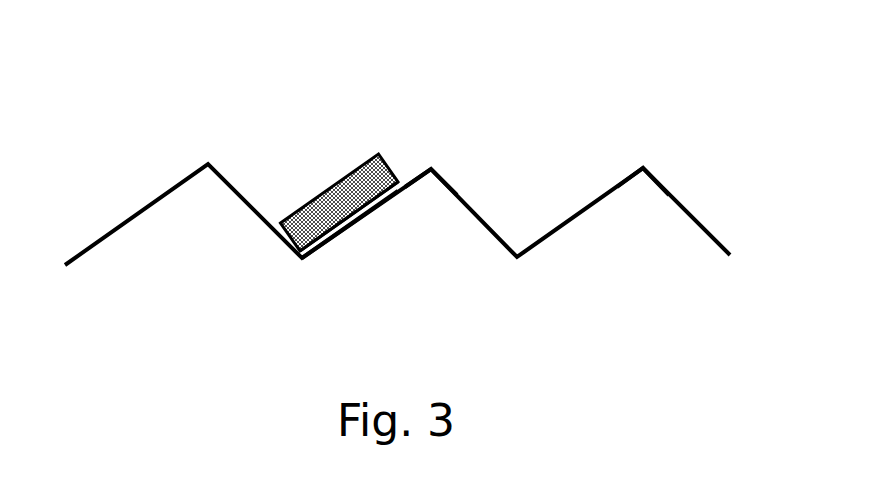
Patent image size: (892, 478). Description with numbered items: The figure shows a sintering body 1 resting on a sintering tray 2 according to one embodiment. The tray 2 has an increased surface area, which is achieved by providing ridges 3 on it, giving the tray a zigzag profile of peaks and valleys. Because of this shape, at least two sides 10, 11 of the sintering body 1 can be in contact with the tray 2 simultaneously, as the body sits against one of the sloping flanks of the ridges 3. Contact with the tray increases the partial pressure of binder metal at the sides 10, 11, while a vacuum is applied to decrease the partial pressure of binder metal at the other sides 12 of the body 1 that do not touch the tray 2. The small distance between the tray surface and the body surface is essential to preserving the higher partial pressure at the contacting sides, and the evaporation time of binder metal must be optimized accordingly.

The sintering body 1 is at (315, 215).
The sintering tray 2 is at (610, 192).
The ridges 3 is at (432, 168).
The side 10 is at (349, 221).
The side 11 is at (290, 243).
The other sides 12 is at (335, 203).